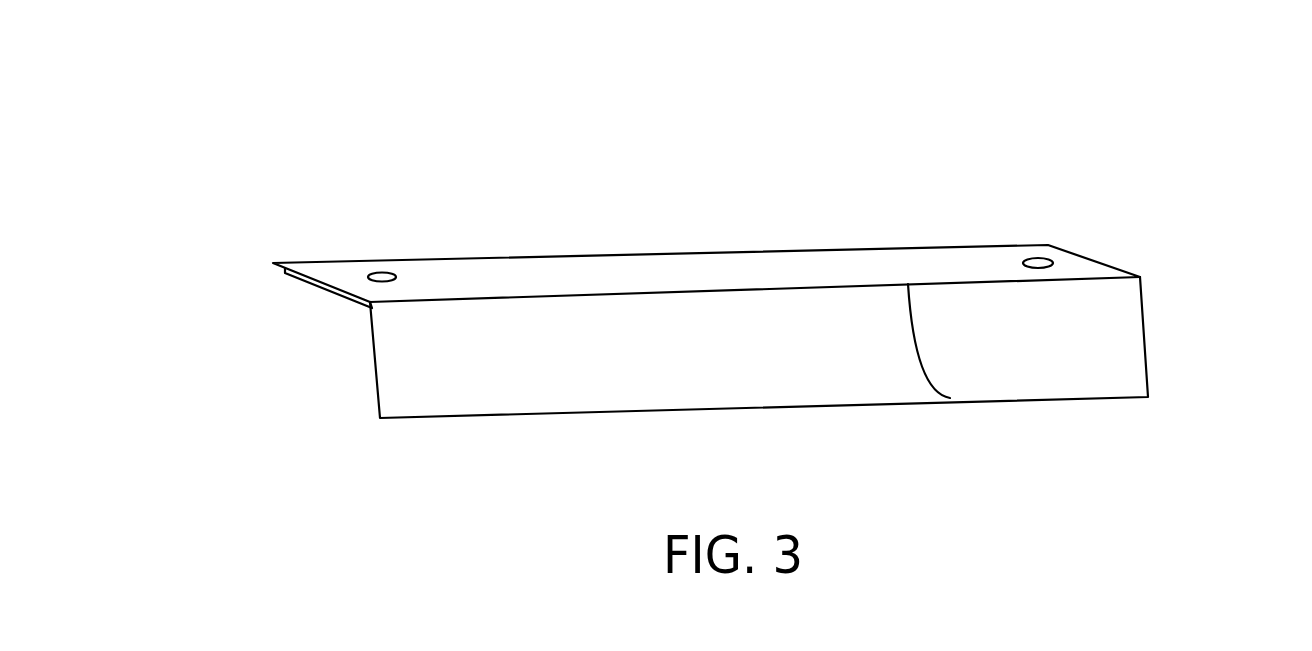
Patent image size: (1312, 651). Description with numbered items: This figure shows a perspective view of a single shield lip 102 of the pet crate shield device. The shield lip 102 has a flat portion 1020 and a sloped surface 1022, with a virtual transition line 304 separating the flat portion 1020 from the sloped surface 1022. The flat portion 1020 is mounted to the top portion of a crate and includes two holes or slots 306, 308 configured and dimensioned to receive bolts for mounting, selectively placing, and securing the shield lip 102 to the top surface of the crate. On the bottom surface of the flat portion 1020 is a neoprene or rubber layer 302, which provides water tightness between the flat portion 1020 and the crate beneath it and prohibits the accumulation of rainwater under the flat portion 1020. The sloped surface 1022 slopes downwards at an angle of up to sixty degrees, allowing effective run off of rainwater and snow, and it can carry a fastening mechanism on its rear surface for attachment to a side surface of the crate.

The shield lip 102 is at (696, 286).
The neoprene or rubber layer 302 is at (323, 292).
The virtual transition line 304 is at (950, 398).
The hole or slot 306 is at (383, 265).
The hole or slot 308 is at (1039, 262).
The flat portion 1020 is at (619, 275).
The sloped surface 1022 is at (1082, 352).